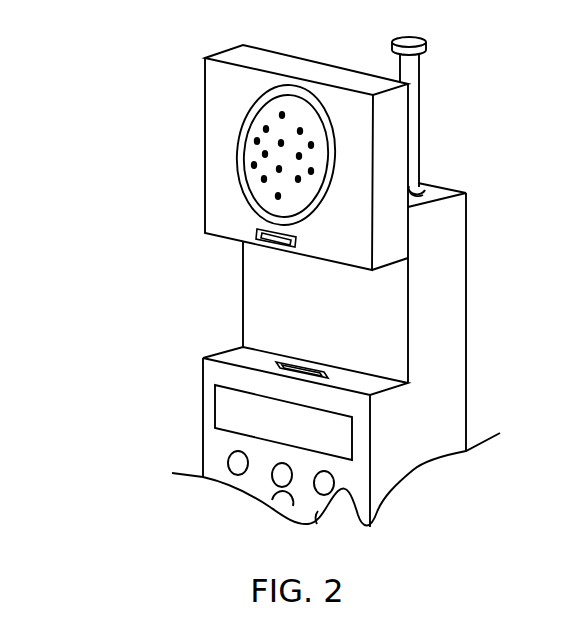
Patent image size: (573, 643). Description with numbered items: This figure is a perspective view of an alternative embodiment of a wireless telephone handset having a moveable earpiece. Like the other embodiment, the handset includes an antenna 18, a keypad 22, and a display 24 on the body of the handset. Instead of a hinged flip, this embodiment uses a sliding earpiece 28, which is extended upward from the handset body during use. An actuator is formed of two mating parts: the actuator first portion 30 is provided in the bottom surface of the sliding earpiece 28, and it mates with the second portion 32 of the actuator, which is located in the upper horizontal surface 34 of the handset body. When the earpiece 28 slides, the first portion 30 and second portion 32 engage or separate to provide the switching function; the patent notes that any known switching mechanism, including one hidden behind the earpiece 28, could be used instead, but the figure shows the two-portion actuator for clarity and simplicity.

The antenna 18 is at (409, 73).
The keypad 22 is at (255, 492).
The display 24 is at (232, 413).
The sliding earpiece 28 is at (254, 165).
The actuator first portion 30 is at (270, 242).
The second portion of the actuator 32 is at (303, 367).
The upper horizontal surface 34 is at (228, 358).